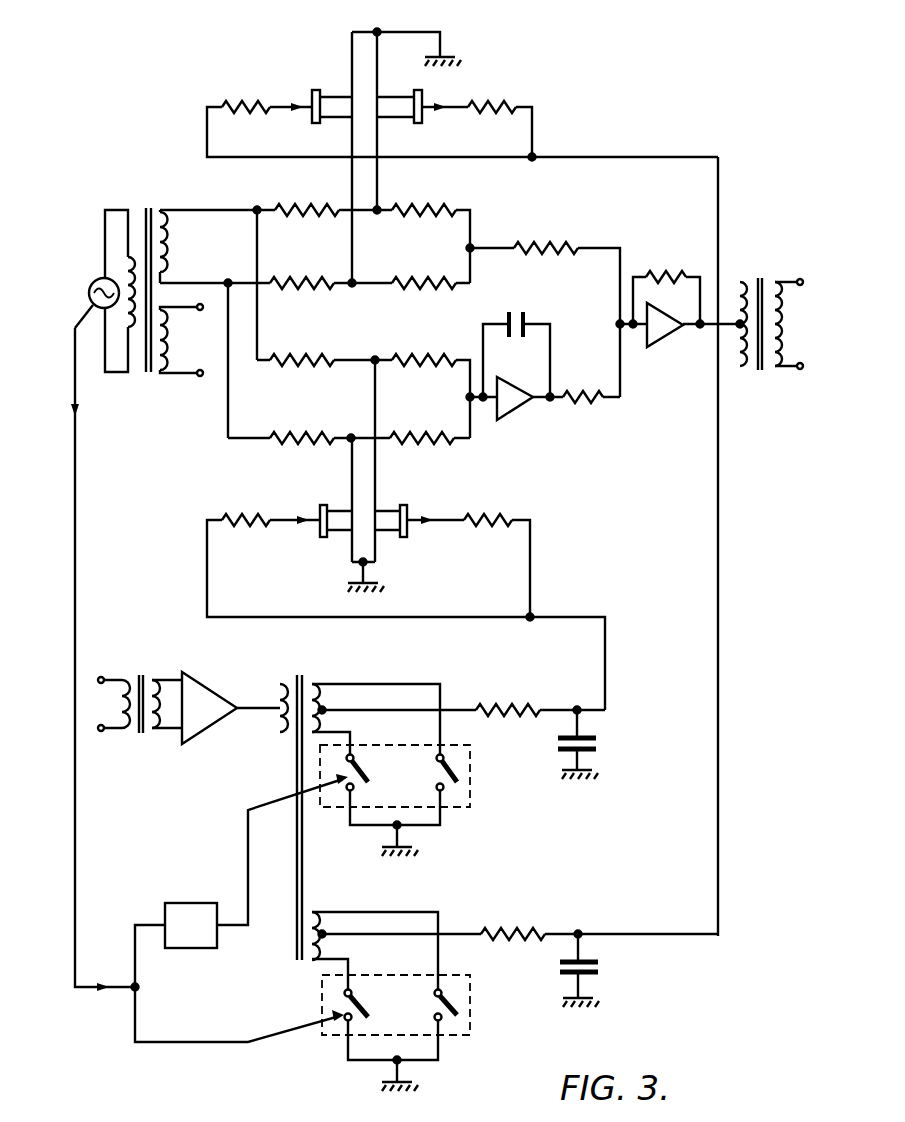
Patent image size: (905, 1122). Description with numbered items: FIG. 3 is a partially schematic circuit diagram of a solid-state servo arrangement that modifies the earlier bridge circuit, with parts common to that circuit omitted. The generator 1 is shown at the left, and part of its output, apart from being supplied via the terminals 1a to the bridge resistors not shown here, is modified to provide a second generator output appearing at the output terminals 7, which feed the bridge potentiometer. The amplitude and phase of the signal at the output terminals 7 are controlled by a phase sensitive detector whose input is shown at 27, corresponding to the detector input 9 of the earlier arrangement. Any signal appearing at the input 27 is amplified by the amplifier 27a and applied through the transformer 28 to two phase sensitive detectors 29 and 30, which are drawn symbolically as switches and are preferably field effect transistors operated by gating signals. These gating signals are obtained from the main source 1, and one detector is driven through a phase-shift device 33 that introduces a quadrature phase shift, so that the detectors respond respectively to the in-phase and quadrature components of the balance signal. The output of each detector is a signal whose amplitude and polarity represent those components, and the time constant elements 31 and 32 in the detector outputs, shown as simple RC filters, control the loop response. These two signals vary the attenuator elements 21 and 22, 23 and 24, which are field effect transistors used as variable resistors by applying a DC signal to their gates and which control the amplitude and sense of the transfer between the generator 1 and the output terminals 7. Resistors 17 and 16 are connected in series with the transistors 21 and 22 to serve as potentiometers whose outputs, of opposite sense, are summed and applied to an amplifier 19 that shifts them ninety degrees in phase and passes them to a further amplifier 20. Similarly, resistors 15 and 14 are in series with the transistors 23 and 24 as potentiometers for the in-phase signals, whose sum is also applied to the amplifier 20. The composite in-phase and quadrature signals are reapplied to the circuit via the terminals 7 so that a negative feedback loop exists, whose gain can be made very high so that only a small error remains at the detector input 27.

The generator 1 is at (97, 278).
The terminals 1a is at (174, 340).
The output terminals 7 is at (782, 334).
The detector input 9 is at (117, 702).
The resistor 14 is at (294, 204).
The resistor 15 is at (302, 277).
The resistor 16 is at (300, 354).
The resistor 17 is at (298, 432).
The amplifier 19 is at (518, 409).
The further amplifier 20 is at (675, 340).
The attenuator element 21 is at (318, 503).
The attenuator element 22 is at (410, 504).
The attenuator element 23 is at (314, 91).
The attenuator element 24 is at (425, 93).
The phase sensitive detector input 27 is at (150, 662).
The amplifier 27a is at (227, 678).
The transformer 28 is at (303, 682).
The phase sensitive detector 29 is at (472, 775).
The phase sensitive detector 30 is at (470, 1025).
The time constant element 31 is at (598, 742).
The time constant element 32 is at (599, 968).
The phase-shift device 33 is at (192, 903).